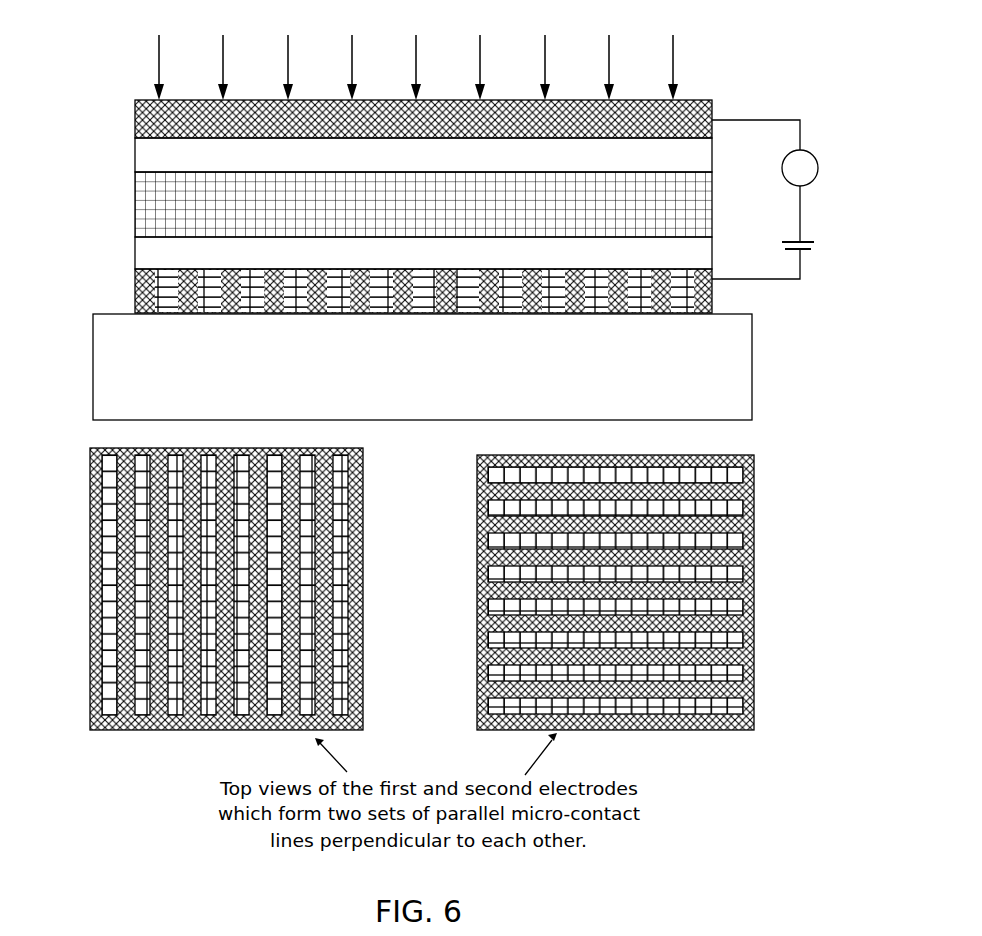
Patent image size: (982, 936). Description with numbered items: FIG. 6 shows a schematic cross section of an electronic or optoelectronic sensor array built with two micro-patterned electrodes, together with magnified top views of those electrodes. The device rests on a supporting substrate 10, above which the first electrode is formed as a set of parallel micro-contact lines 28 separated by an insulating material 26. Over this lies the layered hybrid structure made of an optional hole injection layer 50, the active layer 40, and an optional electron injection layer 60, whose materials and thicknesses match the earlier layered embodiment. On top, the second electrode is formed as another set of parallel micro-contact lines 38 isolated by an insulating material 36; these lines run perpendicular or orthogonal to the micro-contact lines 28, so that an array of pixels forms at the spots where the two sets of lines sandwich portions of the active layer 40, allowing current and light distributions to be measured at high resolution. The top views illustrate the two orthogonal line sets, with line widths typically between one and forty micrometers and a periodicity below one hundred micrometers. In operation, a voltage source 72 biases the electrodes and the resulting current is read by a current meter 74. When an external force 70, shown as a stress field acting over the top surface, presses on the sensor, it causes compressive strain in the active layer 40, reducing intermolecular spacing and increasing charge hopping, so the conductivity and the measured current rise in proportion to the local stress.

The supporting substrate 10 is at (93, 363).
The insulating material 26 is at (155, 297).
The micro-contact lines 28 is at (712, 290).
The insulating material 36 is at (135, 110).
The micro-contact lines 38 is at (135, 120).
The active layer 40 is at (135, 197).
The hole injection layer 50 is at (135, 257).
The electron injection layer 60 is at (135, 160).
The external force 70 is at (677, 33).
The voltage source 72 is at (815, 245).
The current meter 74 is at (813, 148).